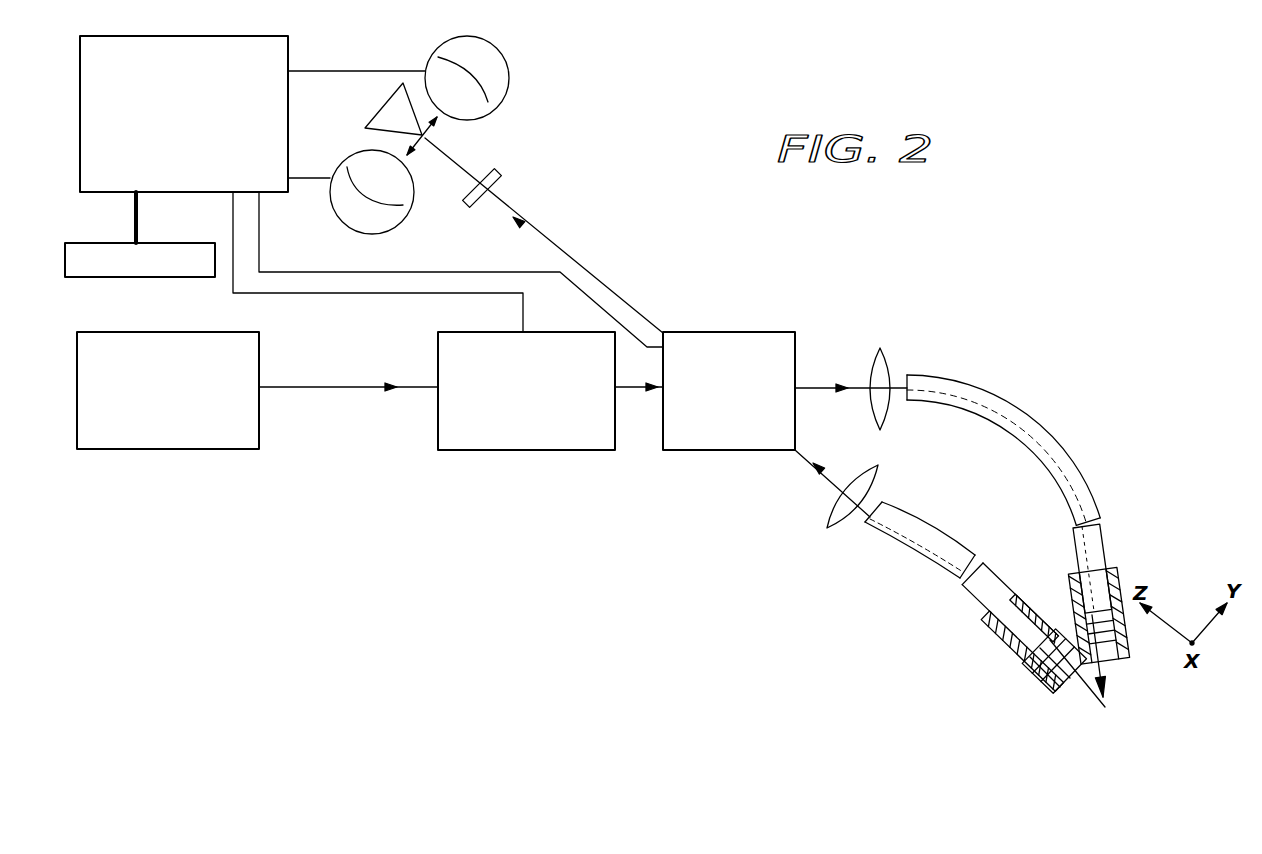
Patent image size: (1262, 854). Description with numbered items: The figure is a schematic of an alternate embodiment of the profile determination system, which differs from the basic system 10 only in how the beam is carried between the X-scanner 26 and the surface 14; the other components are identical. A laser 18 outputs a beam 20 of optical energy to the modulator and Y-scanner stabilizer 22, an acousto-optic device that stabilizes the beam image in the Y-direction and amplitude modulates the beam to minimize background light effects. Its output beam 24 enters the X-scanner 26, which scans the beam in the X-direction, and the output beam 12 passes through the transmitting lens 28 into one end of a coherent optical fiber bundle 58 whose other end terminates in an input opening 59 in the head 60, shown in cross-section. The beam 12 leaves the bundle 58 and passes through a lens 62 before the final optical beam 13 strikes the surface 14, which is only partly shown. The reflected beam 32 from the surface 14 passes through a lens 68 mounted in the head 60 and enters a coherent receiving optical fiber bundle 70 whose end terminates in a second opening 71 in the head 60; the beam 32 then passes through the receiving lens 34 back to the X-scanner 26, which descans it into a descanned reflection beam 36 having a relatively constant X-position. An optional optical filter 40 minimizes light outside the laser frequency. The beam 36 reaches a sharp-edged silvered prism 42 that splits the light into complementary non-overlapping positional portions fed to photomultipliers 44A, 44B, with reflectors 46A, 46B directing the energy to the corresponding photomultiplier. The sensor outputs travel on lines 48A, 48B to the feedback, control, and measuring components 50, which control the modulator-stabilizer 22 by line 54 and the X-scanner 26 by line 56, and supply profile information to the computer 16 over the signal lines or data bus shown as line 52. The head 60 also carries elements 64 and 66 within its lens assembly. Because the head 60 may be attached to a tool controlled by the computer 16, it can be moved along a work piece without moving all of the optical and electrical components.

The system for profile determination 10 is at (381, 447).
The output beam of the X-scanner 12 is at (815, 386).
The optical beam 13 is at (1110, 700).
The surface 14 is at (1105, 707).
The computer 16 is at (152, 277).
The laser 18 is at (192, 450).
The beam 20 is at (312, 385).
The modulator and Y-scanner stabilizer 22 is at (550, 450).
The output beam 24 is at (623, 390).
The X-scanner 26 is at (718, 450).
The transmitting lens 28 is at (889, 356).
The reflected beam 32 is at (830, 477).
The receiving lens 34 is at (879, 471).
The descanned reflection beam 36 is at (607, 290).
The optical filter 40 is at (500, 178).
The sharp-edged silvered prism 42 is at (372, 114).
The photomultiplier 44A is at (510, 70).
The photomultiplier 44B is at (403, 219).
The reflector 46A is at (440, 56).
The reflector 46B is at (357, 188).
The line 48A is at (310, 72).
The line 48B is at (308, 178).
The feedback, control, and measuring components 50 is at (236, 36).
The line 52 is at (138, 216).
The line 54 is at (365, 293).
The line 56 is at (395, 272).
The coherent optical fiber bundle 58 is at (1010, 396).
The input opening 59 is at (1100, 567).
The head 60 is at (1120, 580).
The lens 62 is at (1077, 628).
The focusing lens 64 is at (1122, 666).
The collecting lens 66 is at (1047, 677).
The lens 68 is at (1032, 663).
The coherent receiving optical fiber bundle 70 is at (957, 545).
The second opening 71 is at (1018, 596).